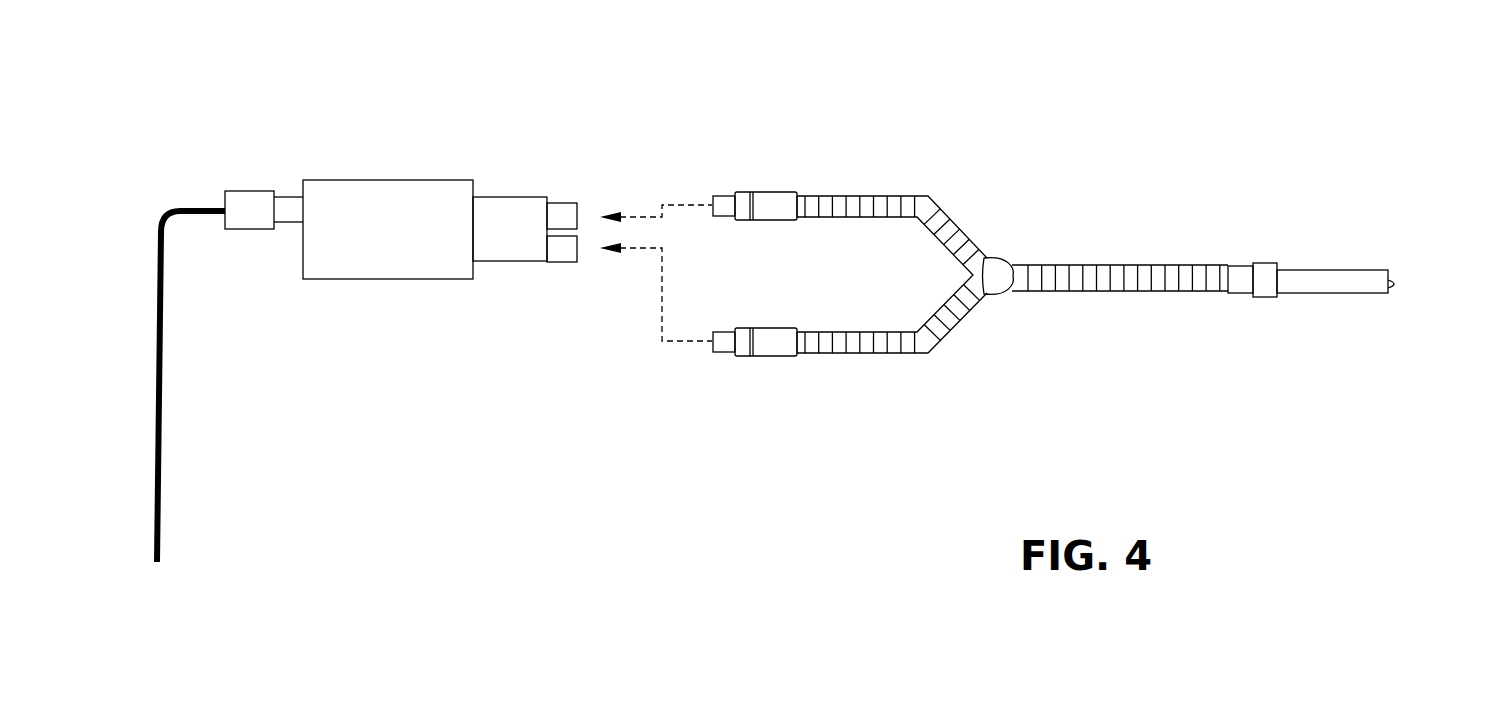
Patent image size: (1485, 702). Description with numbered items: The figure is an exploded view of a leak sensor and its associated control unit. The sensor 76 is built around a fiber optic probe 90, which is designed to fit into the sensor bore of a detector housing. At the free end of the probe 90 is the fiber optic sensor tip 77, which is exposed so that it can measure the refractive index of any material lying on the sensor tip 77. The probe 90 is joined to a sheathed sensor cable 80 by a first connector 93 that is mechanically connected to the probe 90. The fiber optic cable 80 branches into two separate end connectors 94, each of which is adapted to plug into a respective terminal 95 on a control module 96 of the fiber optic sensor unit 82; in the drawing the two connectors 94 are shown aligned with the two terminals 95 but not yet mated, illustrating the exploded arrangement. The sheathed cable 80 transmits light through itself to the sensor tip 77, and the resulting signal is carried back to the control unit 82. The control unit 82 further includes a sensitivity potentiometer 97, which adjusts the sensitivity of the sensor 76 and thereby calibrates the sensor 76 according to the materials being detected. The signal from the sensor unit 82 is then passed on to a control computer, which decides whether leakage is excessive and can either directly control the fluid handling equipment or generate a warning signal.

The fiber optic sensor unit 82 is at (336, 126).
The control module 96 is at (412, 205).
The sensitivity potentiometer 97 is at (354, 235).
The terminals 95 is at (563, 203).
The sensor 76 is at (1105, 176).
The end connectors 94 is at (743, 200).
The sheathed sensor cable 80 is at (882, 208).
The first connector 93 is at (1238, 290).
The fiber optic probe 90 is at (1318, 278).
The fiber optic sensor tip 77 is at (1395, 288).